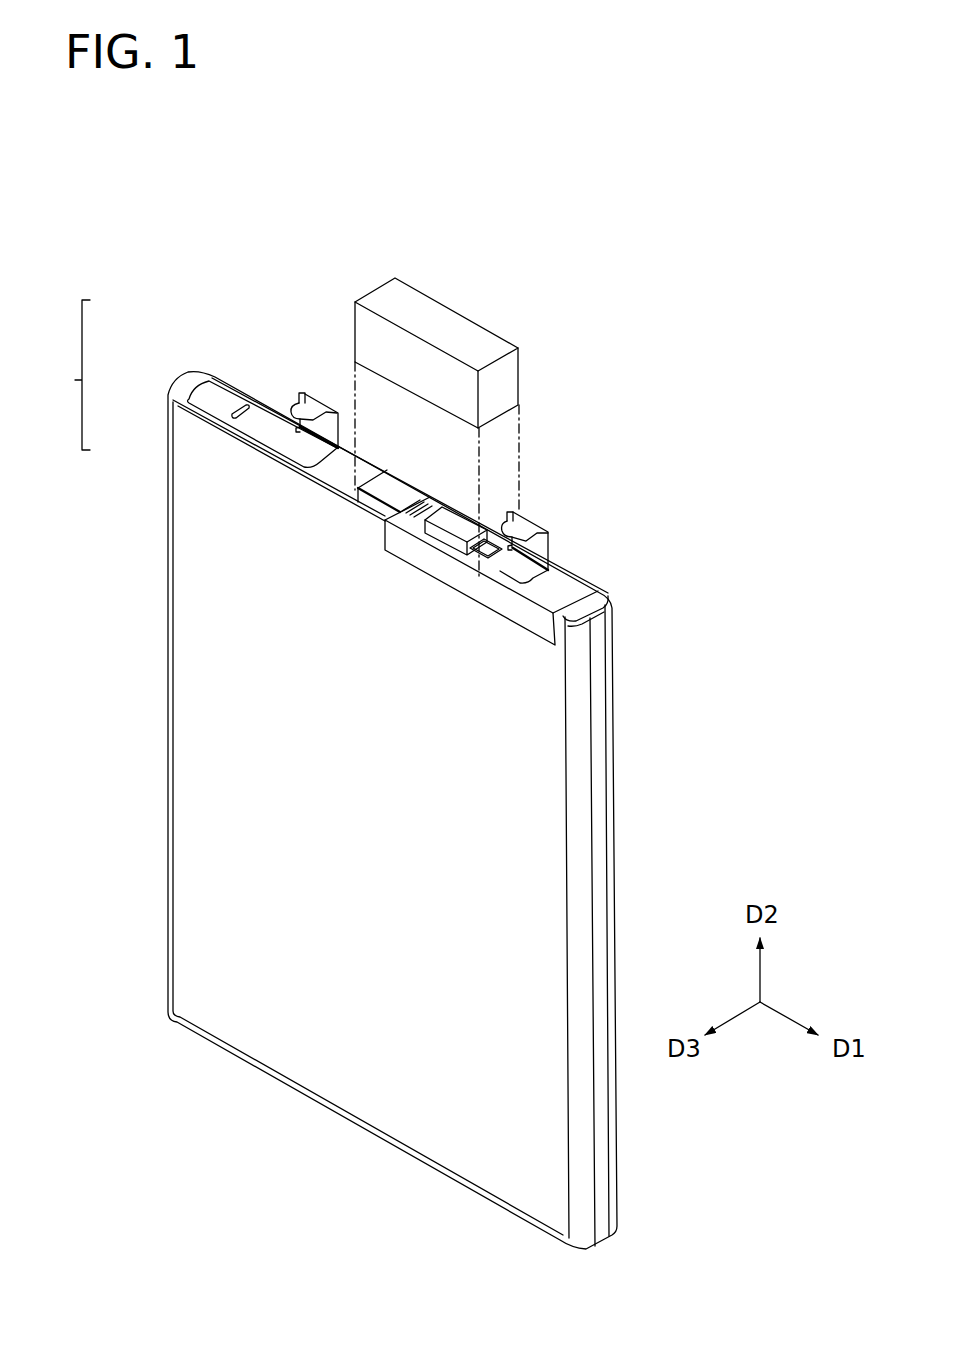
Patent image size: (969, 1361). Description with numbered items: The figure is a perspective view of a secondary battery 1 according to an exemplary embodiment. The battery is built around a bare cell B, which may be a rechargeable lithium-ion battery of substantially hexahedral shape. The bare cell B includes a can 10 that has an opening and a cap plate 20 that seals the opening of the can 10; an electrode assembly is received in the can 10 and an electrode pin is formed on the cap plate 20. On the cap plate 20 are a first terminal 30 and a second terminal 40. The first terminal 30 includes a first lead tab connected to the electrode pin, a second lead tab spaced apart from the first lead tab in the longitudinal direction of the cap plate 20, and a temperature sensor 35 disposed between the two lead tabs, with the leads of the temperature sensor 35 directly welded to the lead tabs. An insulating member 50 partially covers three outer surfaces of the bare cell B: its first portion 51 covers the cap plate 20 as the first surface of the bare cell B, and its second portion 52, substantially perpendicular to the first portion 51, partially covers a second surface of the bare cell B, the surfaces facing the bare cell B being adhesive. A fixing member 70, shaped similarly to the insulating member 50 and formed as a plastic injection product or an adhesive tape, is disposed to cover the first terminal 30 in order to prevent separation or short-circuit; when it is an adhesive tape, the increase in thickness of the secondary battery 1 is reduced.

The secondary battery 1 is at (323, 1133).
The can 10 is at (160, 504).
The cap plate 20 is at (173, 383).
The bare cell B is at (73, 375).
The first terminal 30 is at (558, 546).
The temperature sensor 35 is at (455, 518).
The second terminal 40 is at (269, 408).
The insulating member 50 is at (409, 568).
The first portion 51 is at (572, 585).
The second portion 52 is at (454, 580).
The fixing member 70 is at (473, 330).